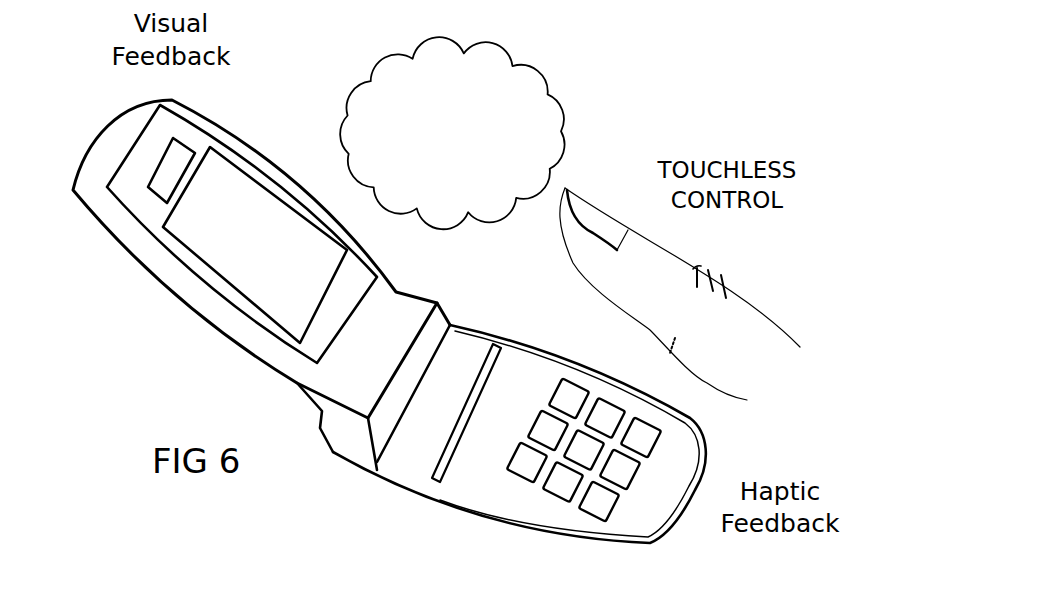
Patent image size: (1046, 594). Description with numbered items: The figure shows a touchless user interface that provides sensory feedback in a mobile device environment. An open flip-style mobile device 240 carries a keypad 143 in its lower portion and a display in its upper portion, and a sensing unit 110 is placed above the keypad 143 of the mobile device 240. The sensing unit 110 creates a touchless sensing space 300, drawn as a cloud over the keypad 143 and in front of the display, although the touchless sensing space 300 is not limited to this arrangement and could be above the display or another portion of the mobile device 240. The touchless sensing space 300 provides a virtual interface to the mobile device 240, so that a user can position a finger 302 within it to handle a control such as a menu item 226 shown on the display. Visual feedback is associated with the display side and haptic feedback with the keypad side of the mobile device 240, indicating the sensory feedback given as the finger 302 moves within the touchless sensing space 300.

The mobile device 240 is at (800, 66).
The menu item 226 is at (178, 187).
The sensing unit 110 is at (462, 438).
The keypad 143 is at (565, 380).
The touchless sensing space 300 is at (565, 93).
The finger 302 is at (742, 295).